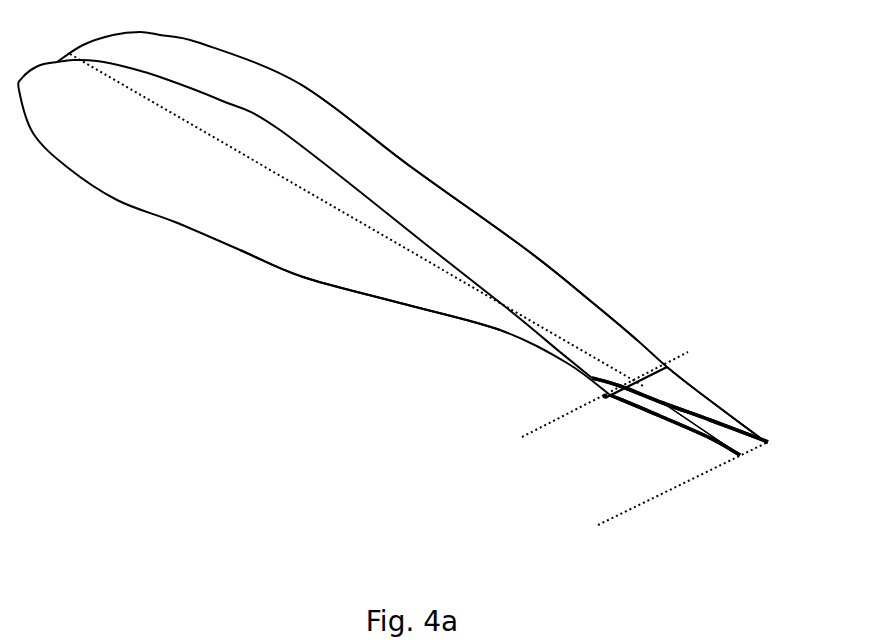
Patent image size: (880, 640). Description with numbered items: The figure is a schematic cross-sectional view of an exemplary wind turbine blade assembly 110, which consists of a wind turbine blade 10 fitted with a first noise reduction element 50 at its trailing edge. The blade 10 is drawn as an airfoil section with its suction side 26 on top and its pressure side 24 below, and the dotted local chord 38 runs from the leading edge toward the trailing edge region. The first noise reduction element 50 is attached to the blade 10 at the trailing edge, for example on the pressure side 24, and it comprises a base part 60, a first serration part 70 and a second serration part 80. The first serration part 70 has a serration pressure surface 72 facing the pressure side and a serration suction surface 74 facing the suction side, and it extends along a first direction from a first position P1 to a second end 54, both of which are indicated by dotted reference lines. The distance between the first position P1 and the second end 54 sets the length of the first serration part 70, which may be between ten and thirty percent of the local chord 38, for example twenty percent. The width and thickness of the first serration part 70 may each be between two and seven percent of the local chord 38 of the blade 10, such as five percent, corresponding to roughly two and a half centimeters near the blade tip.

The wind turbine blade 10 is at (530, 118).
The wind turbine blade assembly 110 is at (694, 100).
The suction side 26 is at (584, 326).
The pressure side 24 is at (397, 333).
The local chord 38 is at (290, 180).
The first noise reduction element 50 is at (762, 262).
The first serration part 70 is at (692, 396).
The serration suction surface 74 is at (718, 415).
The second serration part 80 is at (680, 427).
The serration pressure surface 72 is at (760, 467).
The base part 60 is at (585, 385).
The second end 54 is at (663, 501).
The first position P1 is at (587, 411).